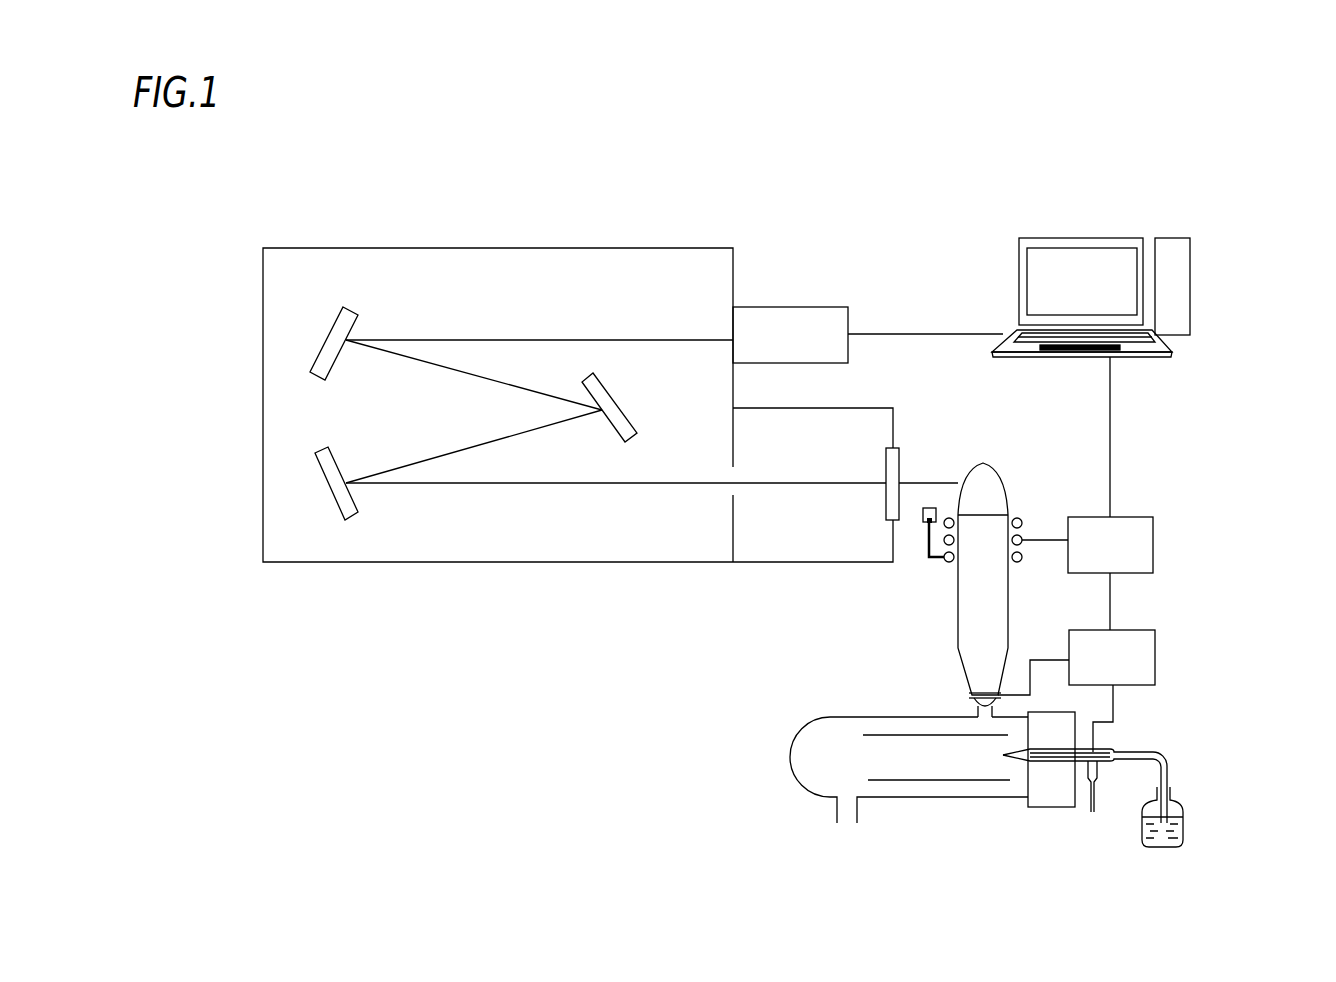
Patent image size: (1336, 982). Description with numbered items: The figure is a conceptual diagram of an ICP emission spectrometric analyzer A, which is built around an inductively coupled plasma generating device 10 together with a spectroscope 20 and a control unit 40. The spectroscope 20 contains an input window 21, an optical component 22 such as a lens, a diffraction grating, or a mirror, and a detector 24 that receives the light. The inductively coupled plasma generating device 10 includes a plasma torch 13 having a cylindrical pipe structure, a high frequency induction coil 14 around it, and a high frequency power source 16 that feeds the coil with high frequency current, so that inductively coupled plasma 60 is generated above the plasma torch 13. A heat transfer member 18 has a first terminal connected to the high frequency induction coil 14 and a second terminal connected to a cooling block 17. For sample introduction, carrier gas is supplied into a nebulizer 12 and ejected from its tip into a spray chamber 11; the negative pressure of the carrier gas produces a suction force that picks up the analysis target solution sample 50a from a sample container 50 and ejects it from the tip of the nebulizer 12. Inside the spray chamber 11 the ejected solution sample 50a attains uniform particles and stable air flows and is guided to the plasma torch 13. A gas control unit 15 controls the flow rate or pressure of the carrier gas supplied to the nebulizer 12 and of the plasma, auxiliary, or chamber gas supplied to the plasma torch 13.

The ICP emission spectrometric analyzer A is at (877, 281).
The inductively coupled plasma generating device 10 is at (1162, 605).
The spray chamber 11 is at (798, 748).
The nebulizer 12 is at (1040, 763).
The plasma torch 13 is at (972, 617).
The high frequency induction coil 14 is at (1023, 553).
The gas control unit 15 is at (1155, 678).
The high frequency power source 16 is at (1132, 517).
The cooling block 17 is at (931, 508).
The heat transfer member 18 is at (937, 560).
The spectroscope 20 is at (683, 248).
The input window 21 is at (897, 450).
The optical component 22 is at (358, 317).
The detector 24 is at (773, 307).
The control unit 40 is at (1110, 237).
The sample container 50 is at (1185, 827).
The analysis target solution sample 50a is at (1142, 831).
The inductively coupled plasma 60 is at (1005, 478).